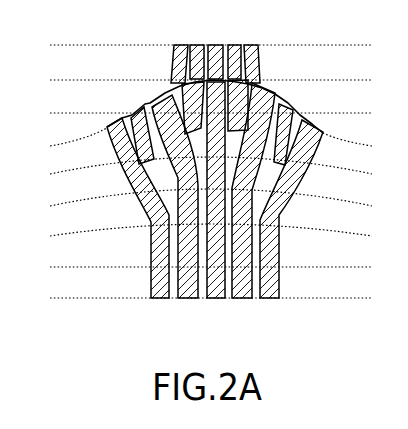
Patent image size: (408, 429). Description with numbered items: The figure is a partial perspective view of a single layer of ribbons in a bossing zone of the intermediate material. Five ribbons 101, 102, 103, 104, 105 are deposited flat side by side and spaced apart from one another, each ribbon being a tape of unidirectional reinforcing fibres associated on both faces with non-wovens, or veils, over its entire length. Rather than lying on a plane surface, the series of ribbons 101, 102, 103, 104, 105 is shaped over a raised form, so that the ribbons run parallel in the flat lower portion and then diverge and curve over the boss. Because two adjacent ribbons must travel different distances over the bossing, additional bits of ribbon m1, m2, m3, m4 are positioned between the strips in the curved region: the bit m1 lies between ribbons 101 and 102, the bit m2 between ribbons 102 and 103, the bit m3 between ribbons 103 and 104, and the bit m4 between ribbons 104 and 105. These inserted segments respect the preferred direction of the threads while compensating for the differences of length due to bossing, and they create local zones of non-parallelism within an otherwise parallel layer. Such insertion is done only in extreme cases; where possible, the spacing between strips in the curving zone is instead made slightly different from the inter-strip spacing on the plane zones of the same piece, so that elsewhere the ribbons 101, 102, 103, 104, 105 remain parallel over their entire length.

The ribbon 101 is at (153, 280).
The ribbon 102 is at (190, 287).
The ribbon 103 is at (210, 288).
The ribbon 104 is at (238, 287).
The ribbon 105 is at (272, 277).
The bit of ribbon m1 is at (144, 113).
The bit of ribbon m2 is at (184, 101).
The bit of ribbon m3 is at (250, 83).
The bit of ribbon m4 is at (290, 107).